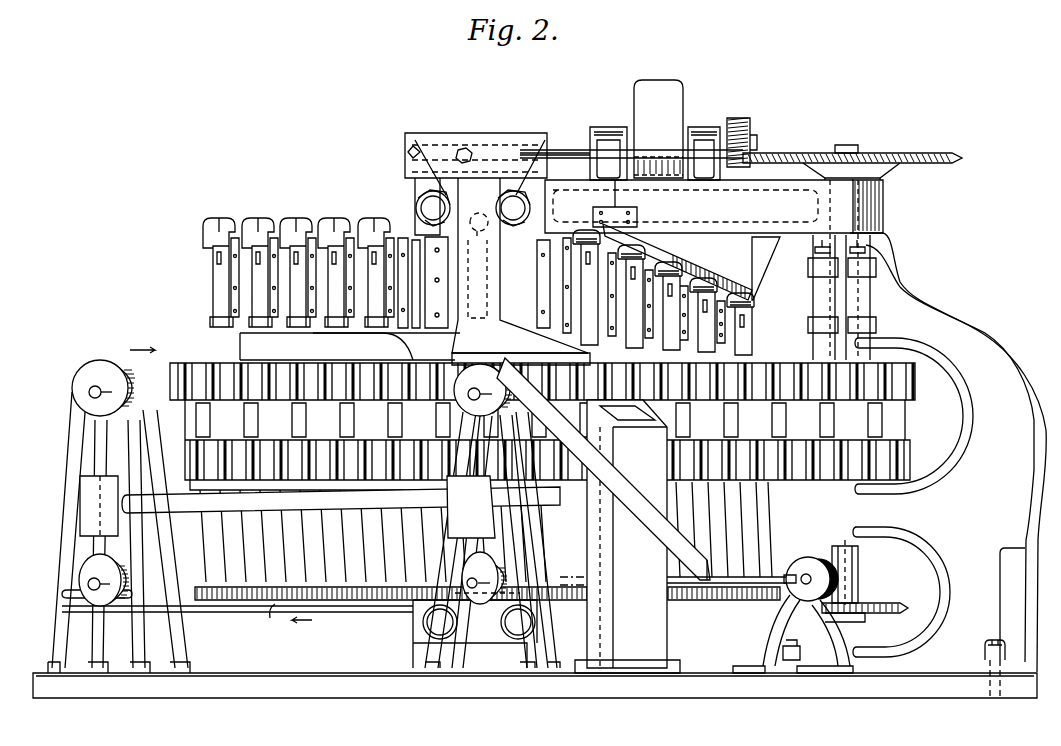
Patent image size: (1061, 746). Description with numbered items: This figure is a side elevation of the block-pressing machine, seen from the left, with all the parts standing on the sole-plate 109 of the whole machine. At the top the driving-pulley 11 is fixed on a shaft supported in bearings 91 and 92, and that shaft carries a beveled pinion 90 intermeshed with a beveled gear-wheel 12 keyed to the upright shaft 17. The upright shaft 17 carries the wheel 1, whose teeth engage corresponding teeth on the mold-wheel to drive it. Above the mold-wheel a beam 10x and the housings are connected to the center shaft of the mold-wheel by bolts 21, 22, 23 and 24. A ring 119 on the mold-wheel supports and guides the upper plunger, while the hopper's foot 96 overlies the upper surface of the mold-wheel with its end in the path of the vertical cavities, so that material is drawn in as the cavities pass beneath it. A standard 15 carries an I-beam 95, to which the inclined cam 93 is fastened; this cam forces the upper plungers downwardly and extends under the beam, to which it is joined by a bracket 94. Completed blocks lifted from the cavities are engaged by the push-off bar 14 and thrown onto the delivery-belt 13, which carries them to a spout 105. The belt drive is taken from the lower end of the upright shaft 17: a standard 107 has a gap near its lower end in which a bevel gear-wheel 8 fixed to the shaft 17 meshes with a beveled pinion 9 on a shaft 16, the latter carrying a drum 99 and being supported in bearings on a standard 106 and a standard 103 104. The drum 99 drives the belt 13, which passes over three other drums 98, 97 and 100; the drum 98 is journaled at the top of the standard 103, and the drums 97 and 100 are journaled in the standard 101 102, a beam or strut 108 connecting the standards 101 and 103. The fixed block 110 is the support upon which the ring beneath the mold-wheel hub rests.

The wheel 1 is at (905, 400).
The bevel gear-wheel 8 is at (870, 606).
The beveled pinion 9 is at (800, 566).
The beam 10x is at (714, 206).
The driving-pulley 11 is at (672, 87).
The beveled gear-wheel 12 is at (935, 153).
The delivery-belt 13 is at (237, 488).
The push-off bar 14 is at (452, 347).
The standard 15 is at (627, 536).
The shaft 16 is at (675, 602).
The upright shaft 17 is at (848, 145).
The bolt 21 is at (416, 208).
The bolt 22 is at (505, 204).
The bolt 23 is at (408, 158).
The bolt 24 is at (572, 149).
The beveled pinion 90 is at (742, 118).
The bearing 91 is at (612, 126).
The bearing 92 is at (705, 126).
The inclined cam 93 is at (665, 250).
The bracket 94 is at (766, 262).
The I-beam 95 is at (600, 207).
The foot 96 is at (521, 271).
The drum 97 is at (80, 380).
The drum 98 is at (483, 390).
The drum 99 is at (487, 578).
The drum 100 is at (104, 580).
The standard 101 is at (66, 613).
The standard 102 is at (182, 633).
The standard 103 is at (469, 540).
The standard 104 is at (548, 648).
The spout 105 is at (648, 488).
The standard 106 is at (768, 652).
The standard 107 is at (948, 465).
The beam or strut 108 is at (341, 500).
The sole-plate 109 is at (535, 685).
The fixed block 110 is at (412, 630).
The ring 119 is at (478, 289).